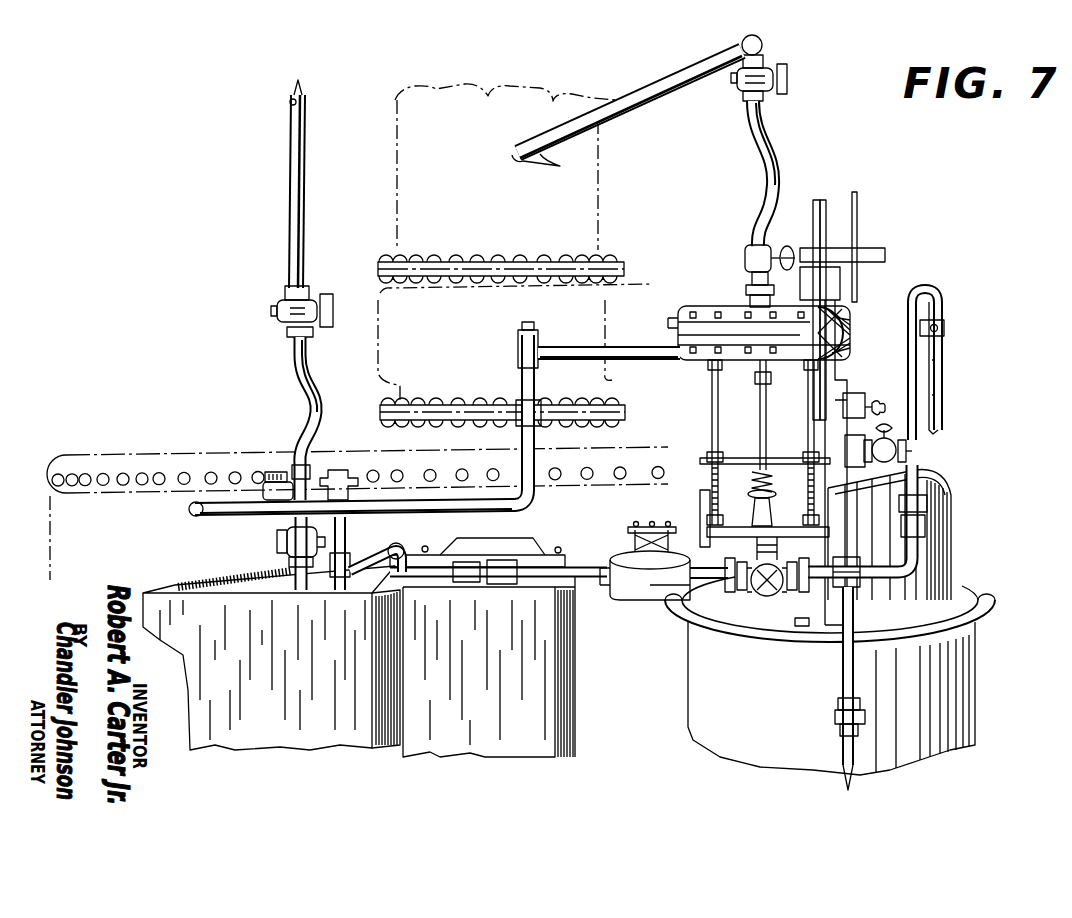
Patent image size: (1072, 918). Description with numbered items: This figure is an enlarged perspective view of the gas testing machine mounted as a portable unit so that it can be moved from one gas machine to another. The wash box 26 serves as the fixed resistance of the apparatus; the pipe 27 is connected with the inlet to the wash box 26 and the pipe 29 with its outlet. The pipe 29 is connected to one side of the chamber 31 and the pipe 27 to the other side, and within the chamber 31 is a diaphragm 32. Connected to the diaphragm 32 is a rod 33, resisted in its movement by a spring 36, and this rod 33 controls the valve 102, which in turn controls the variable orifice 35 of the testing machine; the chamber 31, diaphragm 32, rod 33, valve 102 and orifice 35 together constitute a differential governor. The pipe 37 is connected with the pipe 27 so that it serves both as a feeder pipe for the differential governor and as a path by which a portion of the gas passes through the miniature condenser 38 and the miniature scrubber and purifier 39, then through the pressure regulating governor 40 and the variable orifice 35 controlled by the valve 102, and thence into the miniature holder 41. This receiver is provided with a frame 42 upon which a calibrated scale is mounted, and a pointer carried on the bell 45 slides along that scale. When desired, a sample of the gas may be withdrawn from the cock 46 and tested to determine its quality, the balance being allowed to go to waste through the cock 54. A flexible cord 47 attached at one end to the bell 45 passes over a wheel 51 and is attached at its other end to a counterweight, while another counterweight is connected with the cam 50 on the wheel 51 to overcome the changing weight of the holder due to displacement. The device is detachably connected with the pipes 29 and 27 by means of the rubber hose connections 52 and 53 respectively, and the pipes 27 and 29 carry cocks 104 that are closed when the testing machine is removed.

The wash box 26 is at (143, 458).
The pipe 27 is at (290, 195).
The pipe 29 is at (660, 77).
The chamber 31 is at (718, 305).
The diaphragm 32 is at (840, 335).
The rod 33 is at (760, 402).
The orifice 35 is at (776, 597).
The diaphragm spring 36 is at (808, 403).
The pipe 37 is at (290, 575).
The miniature condenser 38 is at (205, 590).
The miniature scrubber and purifier 39 is at (610, 672).
The pressure regulating governor 40 is at (631, 600).
The miniature holder 41 is at (975, 650).
The frame 42 is at (820, 605).
The bell 45 is at (951, 552).
The cock 46 is at (922, 440).
The flexible cord 47 is at (817, 200).
The cam 50 is at (857, 212).
The wheel 51 is at (823, 200).
The rubber hose connection 52 is at (780, 155).
The rubber hose connection 53 is at (297, 383).
The cock 54 is at (856, 395).
The valve 102 is at (782, 558).
The cock 104 is at (326, 292).